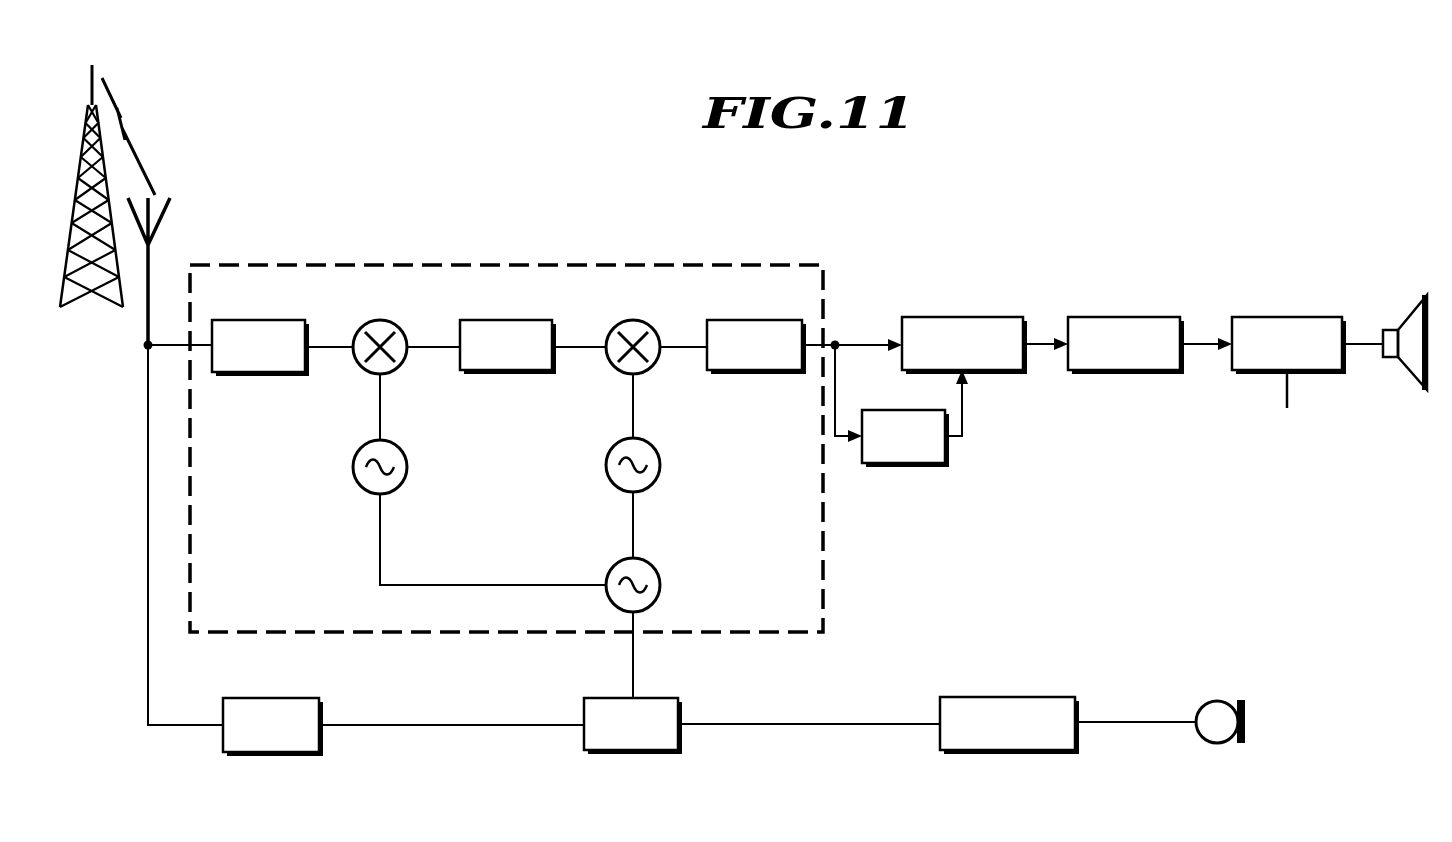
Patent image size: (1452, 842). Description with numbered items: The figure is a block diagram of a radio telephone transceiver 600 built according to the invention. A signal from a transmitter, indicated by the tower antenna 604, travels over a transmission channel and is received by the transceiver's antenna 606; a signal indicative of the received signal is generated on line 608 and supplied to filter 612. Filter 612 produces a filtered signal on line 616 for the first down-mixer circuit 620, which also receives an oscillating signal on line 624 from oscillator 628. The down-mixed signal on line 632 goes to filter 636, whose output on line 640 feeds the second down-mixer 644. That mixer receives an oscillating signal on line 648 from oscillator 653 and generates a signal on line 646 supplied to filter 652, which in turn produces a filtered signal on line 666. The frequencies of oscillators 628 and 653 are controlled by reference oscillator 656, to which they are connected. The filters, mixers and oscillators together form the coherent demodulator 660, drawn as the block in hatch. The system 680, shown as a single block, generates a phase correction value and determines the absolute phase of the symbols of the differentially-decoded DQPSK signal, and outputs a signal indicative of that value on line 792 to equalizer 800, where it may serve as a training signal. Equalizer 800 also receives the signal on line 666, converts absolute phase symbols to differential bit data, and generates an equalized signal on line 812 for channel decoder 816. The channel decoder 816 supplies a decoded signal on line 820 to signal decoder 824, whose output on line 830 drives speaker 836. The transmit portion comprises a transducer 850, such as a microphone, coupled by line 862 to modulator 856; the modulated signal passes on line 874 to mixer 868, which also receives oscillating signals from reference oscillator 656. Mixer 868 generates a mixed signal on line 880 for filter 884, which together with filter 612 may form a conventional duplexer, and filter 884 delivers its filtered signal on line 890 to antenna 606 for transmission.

The transceiver 600 is at (816, 232).
The antenna 604 is at (92, 66).
The antenna 606 is at (168, 210).
The line 608 is at (186, 345).
The filter 612 is at (253, 319).
The line 616 is at (331, 343).
The first down-mixer circuit 620 is at (388, 320).
The line 624 is at (381, 413).
The oscillator 628 is at (407, 466).
The line 632 is at (428, 343).
The filter 636 is at (502, 319).
The line 640 is at (578, 343).
The second down-mixer 644 is at (640, 320).
The line 646 is at (678, 343).
The line 648 is at (634, 413).
The filter 652 is at (748, 319).
The oscillator 653 is at (660, 464).
The reference oscillator 656 is at (658, 574).
The coherent demodulator 660 is at (507, 264).
The line 666 is at (824, 340).
The system 680 is at (915, 464).
The line 792 is at (963, 416).
The equalizer 800 is at (956, 317).
The line 812 is at (1044, 340).
The channel decoder 816 is at (1118, 317).
The line 820 is at (1200, 340).
The signal decoder 824 is at (1288, 316).
The line 830 is at (1362, 340).
The speaker 836 is at (1410, 375).
The transducer 850 is at (1245, 708).
The modulator 856 is at (1000, 696).
The line 862 is at (1135, 723).
The mixer 868 is at (632, 753).
The line 874 is at (775, 726).
The line 880 is at (413, 727).
The filter 884 is at (264, 697).
The line 890 is at (147, 522).